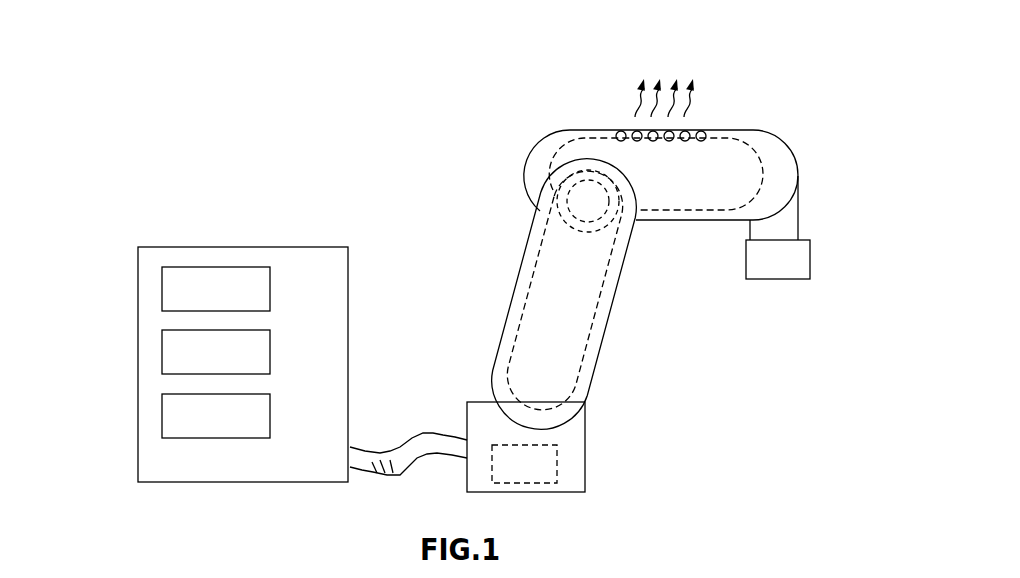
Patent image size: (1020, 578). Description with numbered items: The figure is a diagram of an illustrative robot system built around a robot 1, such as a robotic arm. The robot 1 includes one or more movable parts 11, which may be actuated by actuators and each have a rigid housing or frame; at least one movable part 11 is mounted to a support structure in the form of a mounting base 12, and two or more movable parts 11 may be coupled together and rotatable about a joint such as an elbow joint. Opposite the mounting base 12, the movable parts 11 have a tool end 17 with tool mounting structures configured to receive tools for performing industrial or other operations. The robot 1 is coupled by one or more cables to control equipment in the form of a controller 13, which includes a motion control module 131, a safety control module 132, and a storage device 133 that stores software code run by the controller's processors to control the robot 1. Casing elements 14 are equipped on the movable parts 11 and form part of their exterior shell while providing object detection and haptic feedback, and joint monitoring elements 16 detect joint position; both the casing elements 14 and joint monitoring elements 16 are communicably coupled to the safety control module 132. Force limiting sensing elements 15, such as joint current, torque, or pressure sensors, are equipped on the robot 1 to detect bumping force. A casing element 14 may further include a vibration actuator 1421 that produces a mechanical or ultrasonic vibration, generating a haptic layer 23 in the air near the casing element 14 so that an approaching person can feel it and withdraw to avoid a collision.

The robot 1 is at (240, 99).
The movable part 11 is at (529, 275).
The mounting base 12 is at (467, 382).
The controller 13 is at (193, 296).
The motion control module 131 is at (155, 264).
The safety control module 132 is at (154, 329).
The storage device 133 is at (154, 396).
The casing element 14 is at (661, 236).
The vibration actuator 1421 is at (714, 79).
The force limiting sensing element 15 is at (627, 331).
The joint monitoring element 16 is at (526, 141).
The tool end 17 is at (815, 171).
The haptic layer 23 is at (607, 70).